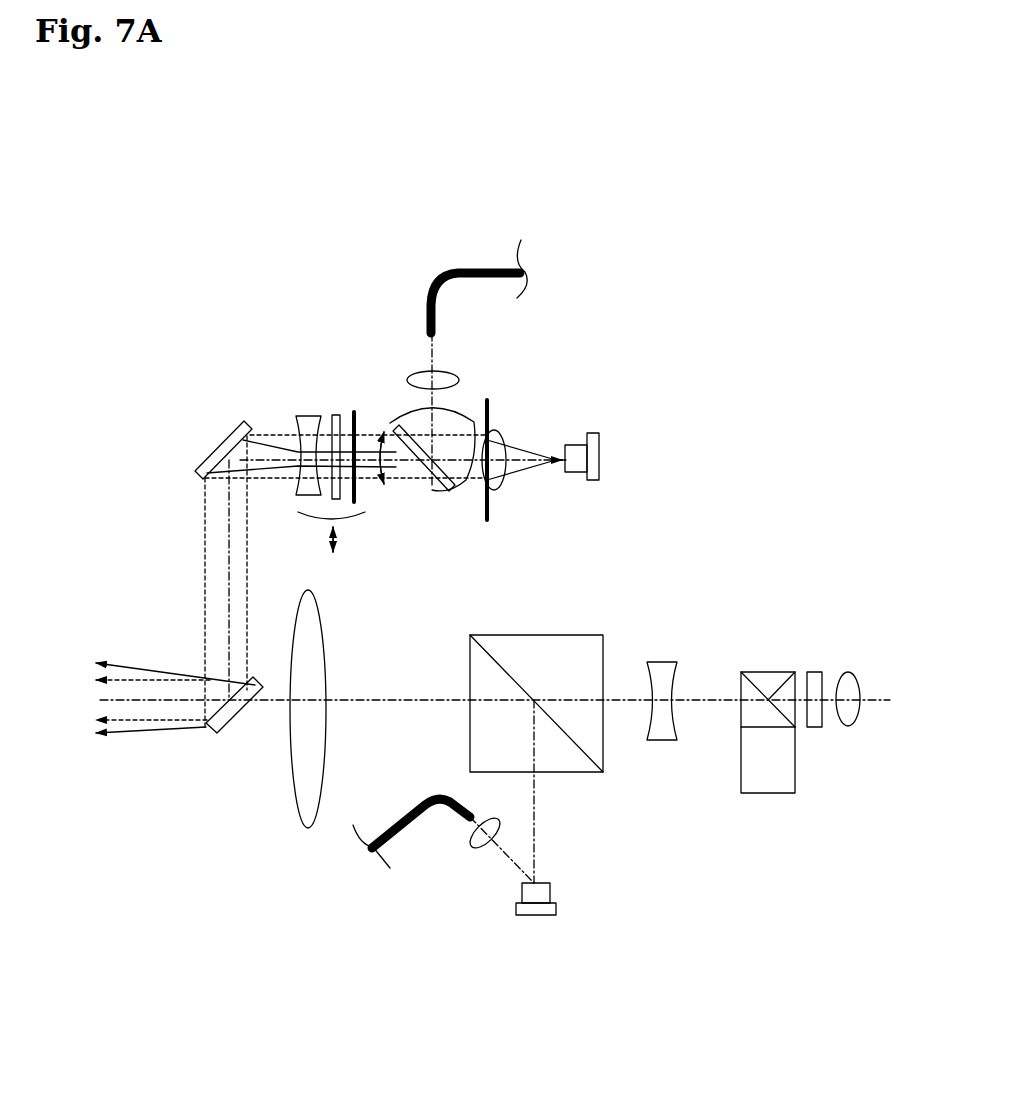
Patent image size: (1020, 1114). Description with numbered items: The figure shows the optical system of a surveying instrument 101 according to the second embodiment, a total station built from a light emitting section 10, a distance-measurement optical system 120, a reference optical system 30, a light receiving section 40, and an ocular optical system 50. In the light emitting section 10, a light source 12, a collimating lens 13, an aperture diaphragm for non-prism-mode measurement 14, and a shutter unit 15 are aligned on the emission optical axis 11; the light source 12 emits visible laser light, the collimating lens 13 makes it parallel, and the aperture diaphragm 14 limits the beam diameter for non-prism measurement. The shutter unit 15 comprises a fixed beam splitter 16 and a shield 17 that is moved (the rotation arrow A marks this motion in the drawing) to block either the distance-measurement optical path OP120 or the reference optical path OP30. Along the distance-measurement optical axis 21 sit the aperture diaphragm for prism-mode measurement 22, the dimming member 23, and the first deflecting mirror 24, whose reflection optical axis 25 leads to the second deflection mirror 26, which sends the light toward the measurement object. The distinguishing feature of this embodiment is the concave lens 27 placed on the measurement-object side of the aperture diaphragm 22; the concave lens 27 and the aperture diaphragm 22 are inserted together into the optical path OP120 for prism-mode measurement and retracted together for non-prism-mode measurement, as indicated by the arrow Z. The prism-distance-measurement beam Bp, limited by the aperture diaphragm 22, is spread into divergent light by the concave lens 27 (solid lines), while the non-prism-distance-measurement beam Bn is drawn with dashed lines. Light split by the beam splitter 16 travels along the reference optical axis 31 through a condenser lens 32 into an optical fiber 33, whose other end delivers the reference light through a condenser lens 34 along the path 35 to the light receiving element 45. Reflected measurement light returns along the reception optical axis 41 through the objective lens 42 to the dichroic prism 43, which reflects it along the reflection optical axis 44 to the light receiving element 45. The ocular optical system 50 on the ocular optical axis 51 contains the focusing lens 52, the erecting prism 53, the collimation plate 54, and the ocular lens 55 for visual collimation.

The surveying instrument 101 is at (130, 432).
The light emitting section 10 is at (592, 385).
The emission optical axis 11 is at (553, 475).
The light source 12 is at (595, 482).
The collimating lens 13 is at (506, 488).
The aperture diaphragm for non-prism-mode measurement 14 is at (489, 412).
The shutter unit 15 is at (472, 528).
The beam splitter 16 is at (434, 489).
The shield 17 is at (455, 487).
The distance-measurement optical system 120 is at (215, 362).
The distance-measurement optical axis 21 is at (275, 480).
The aperture diaphragm for prism-mode measurement 22 is at (357, 411).
The dimming member 23 is at (336, 414).
The first deflecting mirror 24 is at (243, 424).
The reflection optical axis 25 is at (223, 565).
The second deflection mirror 26 is at (213, 736).
The concave lens 27 is at (305, 415).
The reference optical system 30 is at (410, 312).
The reference optical axis 31 is at (434, 345).
The condenser lens 32 is at (460, 378).
The optical fiber 33 is at (490, 282).
The condenser lens 34 is at (478, 848).
The optical path 35 is at (522, 870).
The light receiving section 40 is at (640, 838).
The reception optical axis 41 is at (402, 698).
The objective lens 42 is at (322, 615).
The dichroic prism 43 is at (568, 636).
The reflection optical axis 44 is at (540, 812).
The light receiving element 45 is at (551, 885).
The ocular optical system 50 is at (750, 582).
The ocular optical axis 51 is at (720, 698).
The focusing lens 52 is at (678, 665).
The erecting prism 53 is at (752, 674).
The collimation plate 54 is at (815, 670).
The ocular lens 55 is at (850, 671).
The rotation direction A is at (388, 474).
The arrow Z is at (318, 539).
The non-prism-distance-measurement beam Bn is at (156, 676).
The prism-distance-measurement beam Bp is at (133, 735).
The reference optical path OP30 is at (393, 337).
The distance-measurement optical path OP120 is at (262, 362).